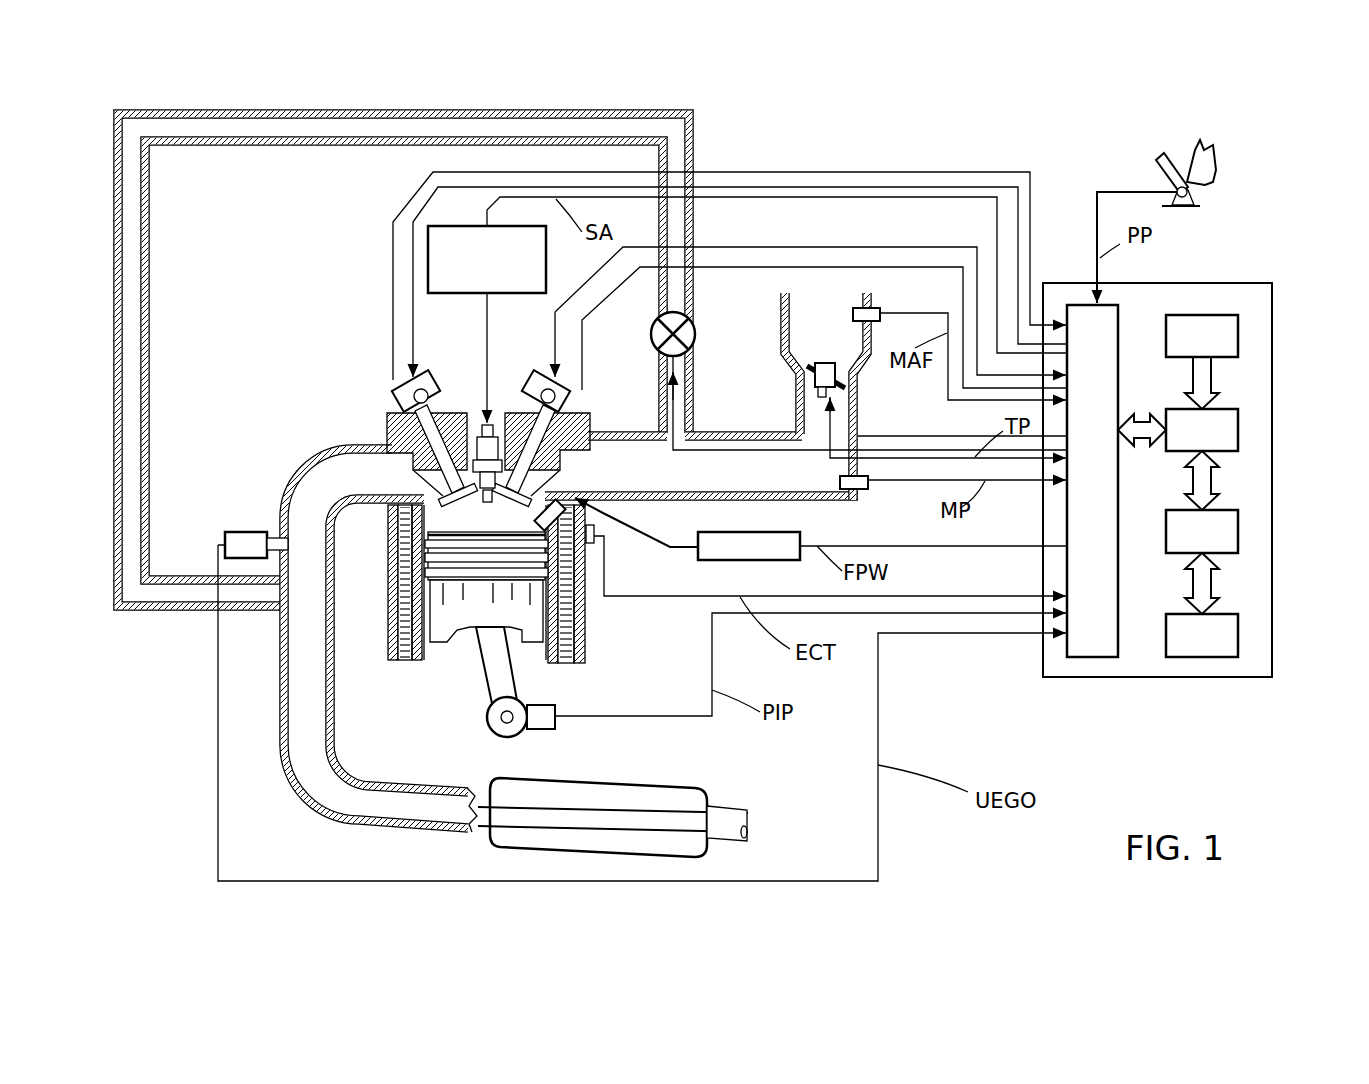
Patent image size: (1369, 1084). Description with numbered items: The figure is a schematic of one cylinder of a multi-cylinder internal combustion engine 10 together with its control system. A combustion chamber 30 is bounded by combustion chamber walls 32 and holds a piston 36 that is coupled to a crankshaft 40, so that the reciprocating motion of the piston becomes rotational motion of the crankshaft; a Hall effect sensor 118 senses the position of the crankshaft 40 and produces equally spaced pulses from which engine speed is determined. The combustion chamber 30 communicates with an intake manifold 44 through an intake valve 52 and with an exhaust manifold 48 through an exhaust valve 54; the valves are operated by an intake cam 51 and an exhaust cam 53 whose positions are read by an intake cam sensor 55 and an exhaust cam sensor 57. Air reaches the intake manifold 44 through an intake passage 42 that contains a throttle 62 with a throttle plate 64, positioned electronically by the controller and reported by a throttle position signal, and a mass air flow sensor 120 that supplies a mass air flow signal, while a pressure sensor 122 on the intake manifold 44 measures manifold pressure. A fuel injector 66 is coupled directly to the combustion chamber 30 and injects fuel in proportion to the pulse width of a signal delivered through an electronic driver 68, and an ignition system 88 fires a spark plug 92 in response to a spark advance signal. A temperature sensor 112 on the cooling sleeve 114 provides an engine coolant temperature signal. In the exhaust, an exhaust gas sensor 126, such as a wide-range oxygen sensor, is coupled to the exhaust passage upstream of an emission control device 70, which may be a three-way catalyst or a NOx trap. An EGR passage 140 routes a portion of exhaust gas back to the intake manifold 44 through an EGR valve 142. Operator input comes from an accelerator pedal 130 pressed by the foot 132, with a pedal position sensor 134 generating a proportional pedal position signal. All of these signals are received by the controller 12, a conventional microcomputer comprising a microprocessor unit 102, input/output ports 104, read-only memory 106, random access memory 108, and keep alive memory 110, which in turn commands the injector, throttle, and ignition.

The internal combustion engine 10 is at (285, 317).
The controller 12 is at (1203, 466).
The combustion chamber 30 is at (397, 610).
The combustion chamber walls 32 is at (428, 657).
The piston 36 is at (468, 615).
The crankshaft 40 is at (500, 735).
The intake passage 42 is at (838, 340).
The intake manifold 44 is at (686, 482).
The exhaust manifold 48 is at (366, 484).
The intake cam 51 is at (545, 377).
The intake valve 52 is at (547, 486).
The exhaust cam 53 is at (430, 377).
The exhaust valve 54 is at (430, 475).
The intake cam sensor 55 is at (586, 390).
The exhaust cam sensor 57 is at (400, 388).
The throttle 62 is at (835, 374).
The throttle plate 64 is at (840, 386).
The fuel injector 66 is at (606, 517).
The electronic driver 68 is at (727, 562).
The emission control device 70 is at (665, 788).
The ignition system 88 is at (447, 225).
The spark plug 92 is at (490, 402).
The microprocessor unit 102 is at (1240, 436).
The input/output ports 104 is at (1120, 315).
The read-only memory 106 is at (1240, 335).
The random access memory 108 is at (1240, 538).
The keep alive memory 110 is at (1240, 638).
The temperature sensor 112 is at (603, 536).
The cooling sleeve 114 is at (587, 624).
The Hall effect sensor 118 is at (542, 732).
The mass air flow sensor 120 is at (873, 308).
The pressure sensor 122 is at (866, 496).
The exhaust gas sensor 126 is at (225, 537).
The accelerator pedal 130 is at (1165, 172).
The foot 132 is at (1212, 170).
The pedal position sensor 134 is at (1200, 195).
The EGR passage 140 is at (396, 111).
The EGR valve 142 is at (695, 336).